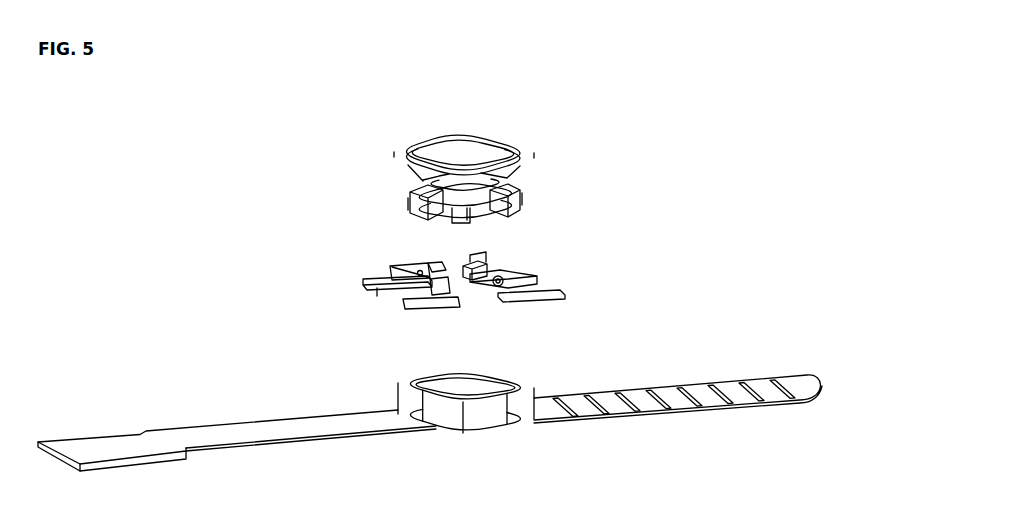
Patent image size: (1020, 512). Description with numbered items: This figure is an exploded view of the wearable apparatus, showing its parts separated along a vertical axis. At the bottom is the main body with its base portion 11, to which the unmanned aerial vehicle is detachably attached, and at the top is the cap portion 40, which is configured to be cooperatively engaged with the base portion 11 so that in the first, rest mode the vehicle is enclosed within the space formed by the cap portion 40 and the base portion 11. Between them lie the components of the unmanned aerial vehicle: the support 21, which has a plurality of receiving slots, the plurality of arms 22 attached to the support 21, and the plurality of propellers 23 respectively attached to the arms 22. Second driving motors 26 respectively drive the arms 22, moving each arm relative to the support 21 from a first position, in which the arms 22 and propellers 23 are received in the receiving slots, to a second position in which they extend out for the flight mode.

The base portion 11 is at (497, 383).
The support 21 is at (517, 195).
The arms 22 is at (543, 272).
The propellers 23 is at (377, 292).
The second driving motors 26 is at (432, 265).
The cap portion 40 is at (513, 153).